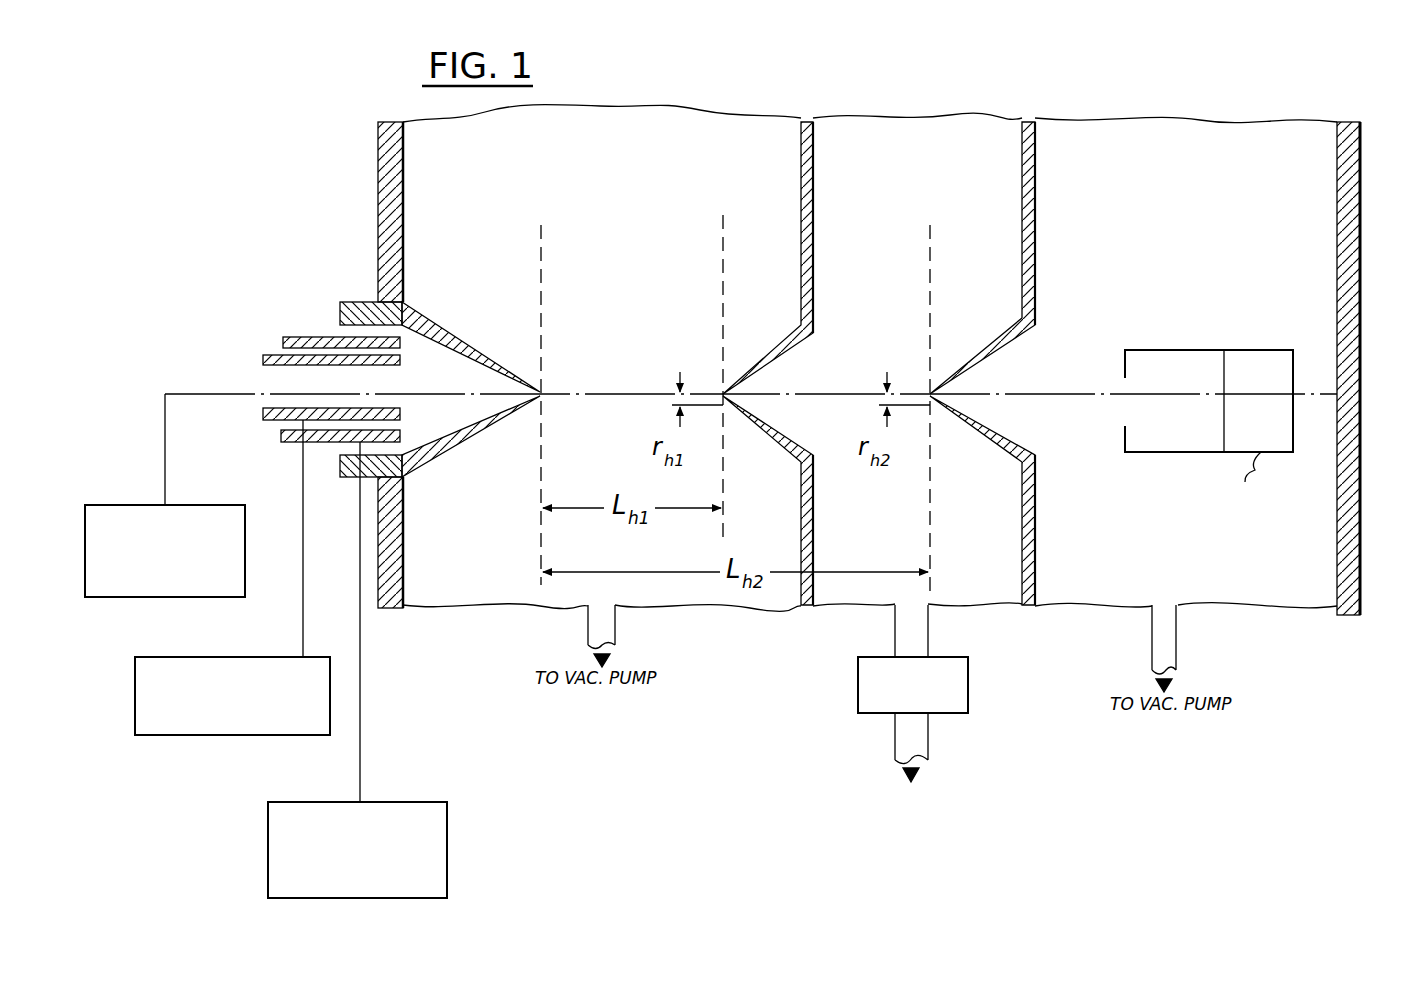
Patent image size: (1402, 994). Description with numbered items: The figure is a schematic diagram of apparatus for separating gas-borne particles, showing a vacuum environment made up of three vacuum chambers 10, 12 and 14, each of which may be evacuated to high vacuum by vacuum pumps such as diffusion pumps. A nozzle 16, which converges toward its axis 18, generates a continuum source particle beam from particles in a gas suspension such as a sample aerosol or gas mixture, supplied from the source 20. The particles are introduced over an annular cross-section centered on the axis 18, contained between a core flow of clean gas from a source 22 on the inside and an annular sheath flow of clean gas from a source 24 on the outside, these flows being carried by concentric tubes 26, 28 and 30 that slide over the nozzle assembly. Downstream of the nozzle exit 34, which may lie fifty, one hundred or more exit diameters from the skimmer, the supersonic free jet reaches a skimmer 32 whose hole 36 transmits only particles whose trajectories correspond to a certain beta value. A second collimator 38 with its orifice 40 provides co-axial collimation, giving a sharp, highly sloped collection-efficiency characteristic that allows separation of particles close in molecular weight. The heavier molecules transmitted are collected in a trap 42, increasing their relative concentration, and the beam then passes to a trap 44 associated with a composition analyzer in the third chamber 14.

The vacuum chamber 10 is at (723, 132).
The vacuum chamber 12 is at (929, 132).
The vacuum chamber 14 is at (1120, 145).
The nozzle 16 is at (455, 334).
The axis 18 is at (630, 393).
The sample aerosol or gas mixture source 20 is at (256, 735).
The clean suspending gas (core) source 22 is at (198, 505).
The clean suspending gas (sheath) source 24 is at (422, 802).
The concentric tube 26 is at (263, 356).
The concentric tube 28 is at (298, 337).
The concentric tube 30 is at (358, 302).
The skimmer 32 is at (764, 356).
The nozzle exit 34 is at (558, 372).
The hole 36 is at (714, 388).
The collimator 38 is at (978, 360).
The second skimmer orifice plane 40 is at (920, 390).
The trap 42 is at (968, 688).
The composition analyzer trap 44 is at (1152, 350).